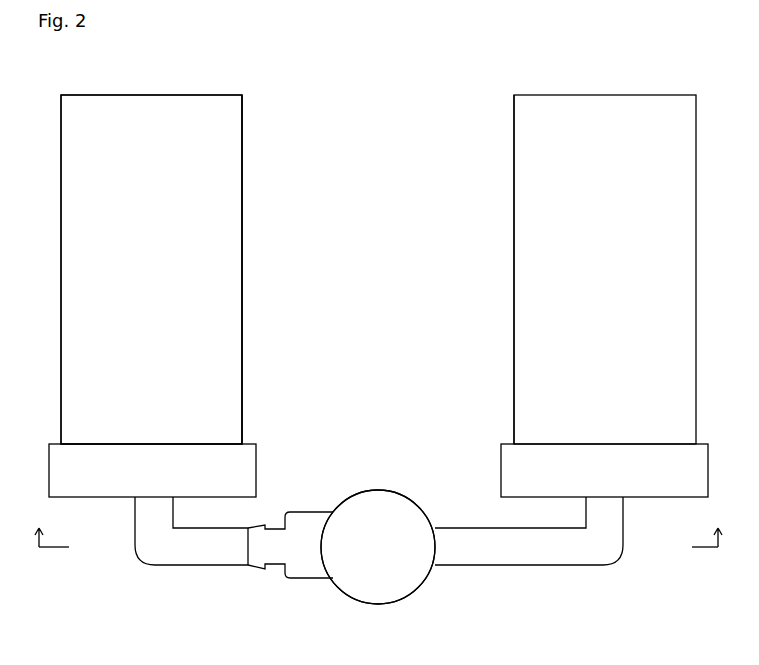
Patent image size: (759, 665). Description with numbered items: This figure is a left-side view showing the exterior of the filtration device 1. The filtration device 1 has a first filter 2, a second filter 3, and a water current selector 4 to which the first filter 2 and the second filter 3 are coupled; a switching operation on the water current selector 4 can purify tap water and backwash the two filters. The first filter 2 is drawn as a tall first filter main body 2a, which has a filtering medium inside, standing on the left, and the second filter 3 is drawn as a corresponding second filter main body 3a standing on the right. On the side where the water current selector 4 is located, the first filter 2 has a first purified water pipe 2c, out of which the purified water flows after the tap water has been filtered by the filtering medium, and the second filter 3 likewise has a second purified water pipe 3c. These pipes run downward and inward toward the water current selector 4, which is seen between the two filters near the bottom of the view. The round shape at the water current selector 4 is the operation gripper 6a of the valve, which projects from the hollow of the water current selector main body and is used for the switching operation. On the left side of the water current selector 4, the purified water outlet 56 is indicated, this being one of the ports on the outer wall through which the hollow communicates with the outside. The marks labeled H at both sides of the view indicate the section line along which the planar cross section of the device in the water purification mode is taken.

The filtration device 1 is at (382, 86).
The first filter 2 is at (245, 273).
The first filter main body 2a is at (227, 353).
The first purified water pipe 2c is at (163, 513).
The second filter 3 is at (512, 273).
The second filter main body 3a is at (530, 353).
The second purified water pipe 3c is at (595, 514).
The water current selector 4 is at (385, 490).
The operation gripper 6a is at (417, 515).
The purified water outlet 56 is at (248, 543).
The H-H section line H is at (378, 528).